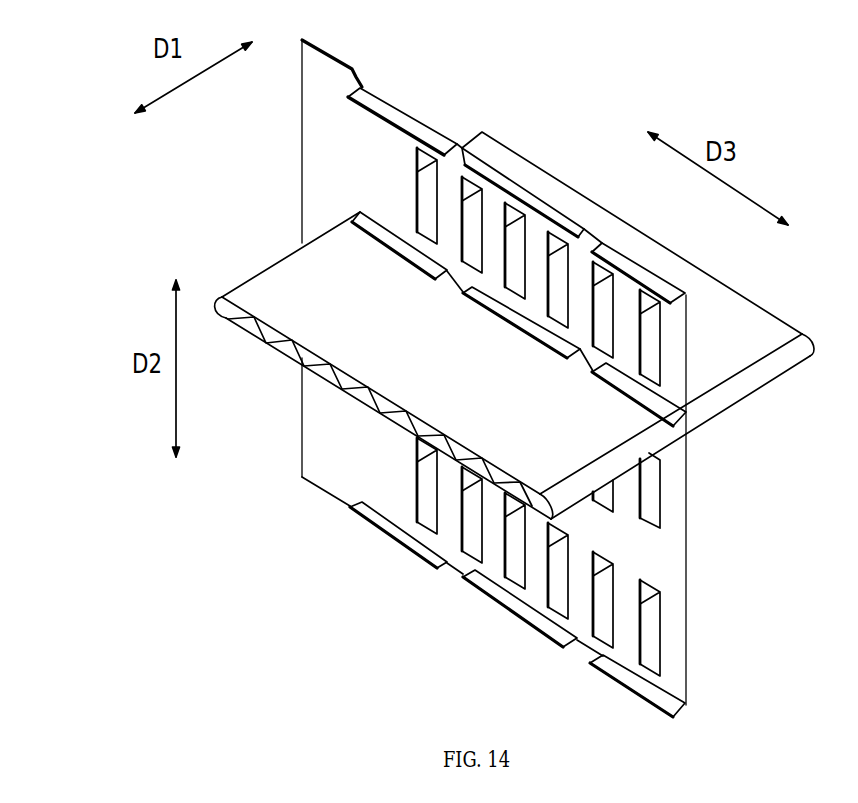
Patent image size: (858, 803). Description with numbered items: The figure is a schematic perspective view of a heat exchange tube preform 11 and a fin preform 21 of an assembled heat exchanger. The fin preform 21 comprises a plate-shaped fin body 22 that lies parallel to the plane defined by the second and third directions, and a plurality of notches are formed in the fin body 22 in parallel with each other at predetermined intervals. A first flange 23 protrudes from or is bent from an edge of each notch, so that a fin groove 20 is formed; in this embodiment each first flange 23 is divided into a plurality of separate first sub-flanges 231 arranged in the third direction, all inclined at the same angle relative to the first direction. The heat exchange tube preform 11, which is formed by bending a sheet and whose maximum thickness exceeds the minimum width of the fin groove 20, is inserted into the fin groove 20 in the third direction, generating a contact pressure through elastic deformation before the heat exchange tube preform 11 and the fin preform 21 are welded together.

The heat exchange tube preform 11 is at (540, 162).
The fin groove 20 is at (683, 577).
The fin preform 21 is at (693, 500).
The fin body 22 is at (333, 435).
The first flange 23 is at (370, 120).
The first sub-flange 231 is at (400, 122).